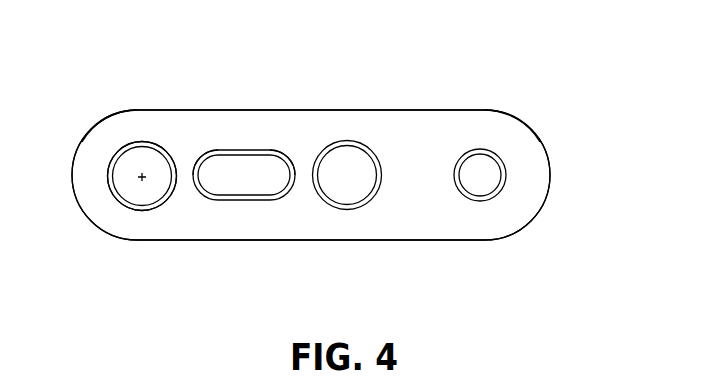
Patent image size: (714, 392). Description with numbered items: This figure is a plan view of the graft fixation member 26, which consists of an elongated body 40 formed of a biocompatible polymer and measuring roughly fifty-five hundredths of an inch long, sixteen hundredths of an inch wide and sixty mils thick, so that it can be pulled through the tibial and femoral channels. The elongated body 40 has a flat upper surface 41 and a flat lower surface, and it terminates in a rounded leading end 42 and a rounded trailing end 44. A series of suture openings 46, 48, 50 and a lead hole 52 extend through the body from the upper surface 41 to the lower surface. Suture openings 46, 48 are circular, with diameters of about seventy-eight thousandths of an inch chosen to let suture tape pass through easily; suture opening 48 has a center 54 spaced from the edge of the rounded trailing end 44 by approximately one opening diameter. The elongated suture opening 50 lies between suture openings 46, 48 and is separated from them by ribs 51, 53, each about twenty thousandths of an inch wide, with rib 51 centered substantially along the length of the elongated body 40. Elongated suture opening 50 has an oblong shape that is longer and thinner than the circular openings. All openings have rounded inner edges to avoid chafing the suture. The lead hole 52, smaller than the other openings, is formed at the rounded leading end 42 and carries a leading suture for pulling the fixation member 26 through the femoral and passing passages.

The fixation member 26 is at (460, 68).
The elongated body 40 is at (102, 133).
The upper surface 41 is at (434, 155).
The rounded leading end 42 is at (538, 171).
The rounded trailing end 44 is at (80, 178).
The suture opening 46 is at (347, 150).
The suture opening 48 is at (139, 204).
The elongated suture opening 50 is at (251, 158).
The rib 51 is at (303, 173).
The lead hole 52 is at (467, 187).
The rib 53 is at (184, 168).
The center 54 is at (147, 152).